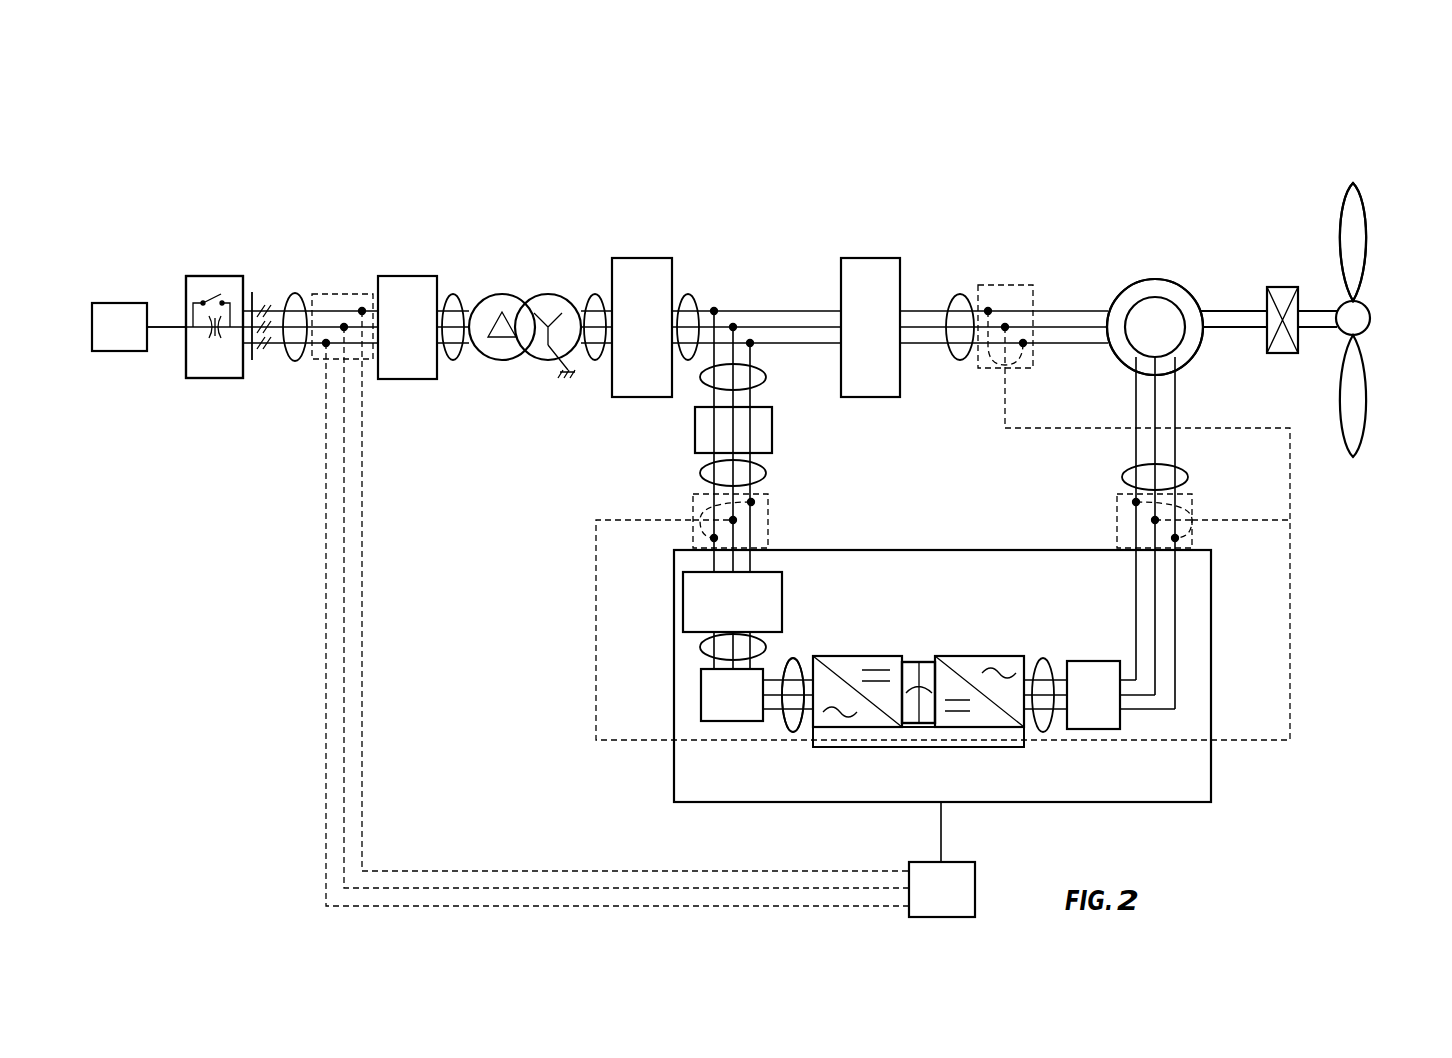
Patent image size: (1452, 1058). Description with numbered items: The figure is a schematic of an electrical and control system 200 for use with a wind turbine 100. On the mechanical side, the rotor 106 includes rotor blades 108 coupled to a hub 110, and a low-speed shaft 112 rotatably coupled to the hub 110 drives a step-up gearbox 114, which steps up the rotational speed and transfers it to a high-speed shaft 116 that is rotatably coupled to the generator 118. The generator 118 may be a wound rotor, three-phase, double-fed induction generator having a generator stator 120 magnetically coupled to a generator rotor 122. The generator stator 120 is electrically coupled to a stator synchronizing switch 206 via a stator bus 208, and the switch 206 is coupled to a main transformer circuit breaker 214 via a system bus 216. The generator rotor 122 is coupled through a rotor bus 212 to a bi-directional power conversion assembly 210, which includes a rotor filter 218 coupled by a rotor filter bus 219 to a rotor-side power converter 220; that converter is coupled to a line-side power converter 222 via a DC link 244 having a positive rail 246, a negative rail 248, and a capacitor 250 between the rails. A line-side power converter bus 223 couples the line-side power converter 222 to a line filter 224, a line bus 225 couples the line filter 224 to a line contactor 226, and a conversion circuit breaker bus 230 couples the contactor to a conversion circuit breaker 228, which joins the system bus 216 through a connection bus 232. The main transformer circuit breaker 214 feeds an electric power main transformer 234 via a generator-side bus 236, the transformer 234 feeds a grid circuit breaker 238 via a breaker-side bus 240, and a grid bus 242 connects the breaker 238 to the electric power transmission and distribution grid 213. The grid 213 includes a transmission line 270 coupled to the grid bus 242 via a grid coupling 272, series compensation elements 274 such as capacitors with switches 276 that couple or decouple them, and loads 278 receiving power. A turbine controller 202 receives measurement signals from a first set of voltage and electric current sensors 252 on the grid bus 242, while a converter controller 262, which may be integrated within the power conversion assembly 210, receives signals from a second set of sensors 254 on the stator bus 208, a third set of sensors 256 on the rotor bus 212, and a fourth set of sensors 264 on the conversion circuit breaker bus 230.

The wind turbine 100 is at (1322, 132).
The rotor 106 is at (1403, 280).
The rotor blades 108 is at (1367, 240).
The hub 110 is at (1370, 325).
The low-speed shaft 112 is at (1312, 308).
The step-up gearbox 114 is at (1283, 287).
The high-speed shaft 116 is at (1240, 308).
The generator 118 is at (1135, 216).
The generator stator 120 is at (1157, 280).
The generator rotor 122 is at (1148, 308).
The electrical and control system 200 is at (243, 142).
The turbine controller 202 is at (942, 889).
The stator synchronizing switch 206 is at (882, 258).
The stator bus 208 is at (960, 295).
The power conversion assembly 210 is at (1212, 673).
The rotor bus 212 is at (1190, 478).
The electric power transmission and distribution grid 213 is at (207, 276).
The main transformer circuit breaker 214 is at (636, 258).
The system bus 216 is at (688, 296).
The rotor filter 218 is at (1090, 668).
The rotor filter bus 219 is at (1043, 660).
The rotor-side power converter 220 is at (1028, 722).
The line-side power converter 222 is at (810, 722).
The line-side power converter bus 223 is at (793, 660).
The line filter 224 is at (701, 695).
The line bus 225 is at (700, 648).
The line contactor 226 is at (683, 600).
The conversion circuit breaker 228 is at (772, 432).
The conversion circuit breaker bus 230 is at (700, 475).
The connection bus 232 is at (767, 378).
The electric power main transformer 234 is at (547, 294).
The generator-side bus 236 is at (596, 296).
The grid circuit breaker 238 is at (398, 276).
The breaker-side bus 240 is at (453, 295).
The grid bus 242 is at (295, 293).
The DC link 244 is at (905, 600).
The positive rail 246 is at (921, 662).
The negative rail 248 is at (922, 730).
The capacitor 250 is at (919, 690).
The first set of voltage and electric current sensors 252 is at (306, 385).
The second set of voltage and electric current sensors 254 is at (1021, 258).
The third set of voltage and electric current sensors 256 is at (1075, 522).
The converter controller 262 is at (978, 735).
The fourth set of voltage and electric current sensors 264 is at (768, 520).
The transmission lines 270 is at (202, 325).
The grid coupling 272 is at (256, 292).
The series compensation elements 274 is at (212, 380).
The switches 276 is at (186, 278).
The loads 278 is at (117, 302).